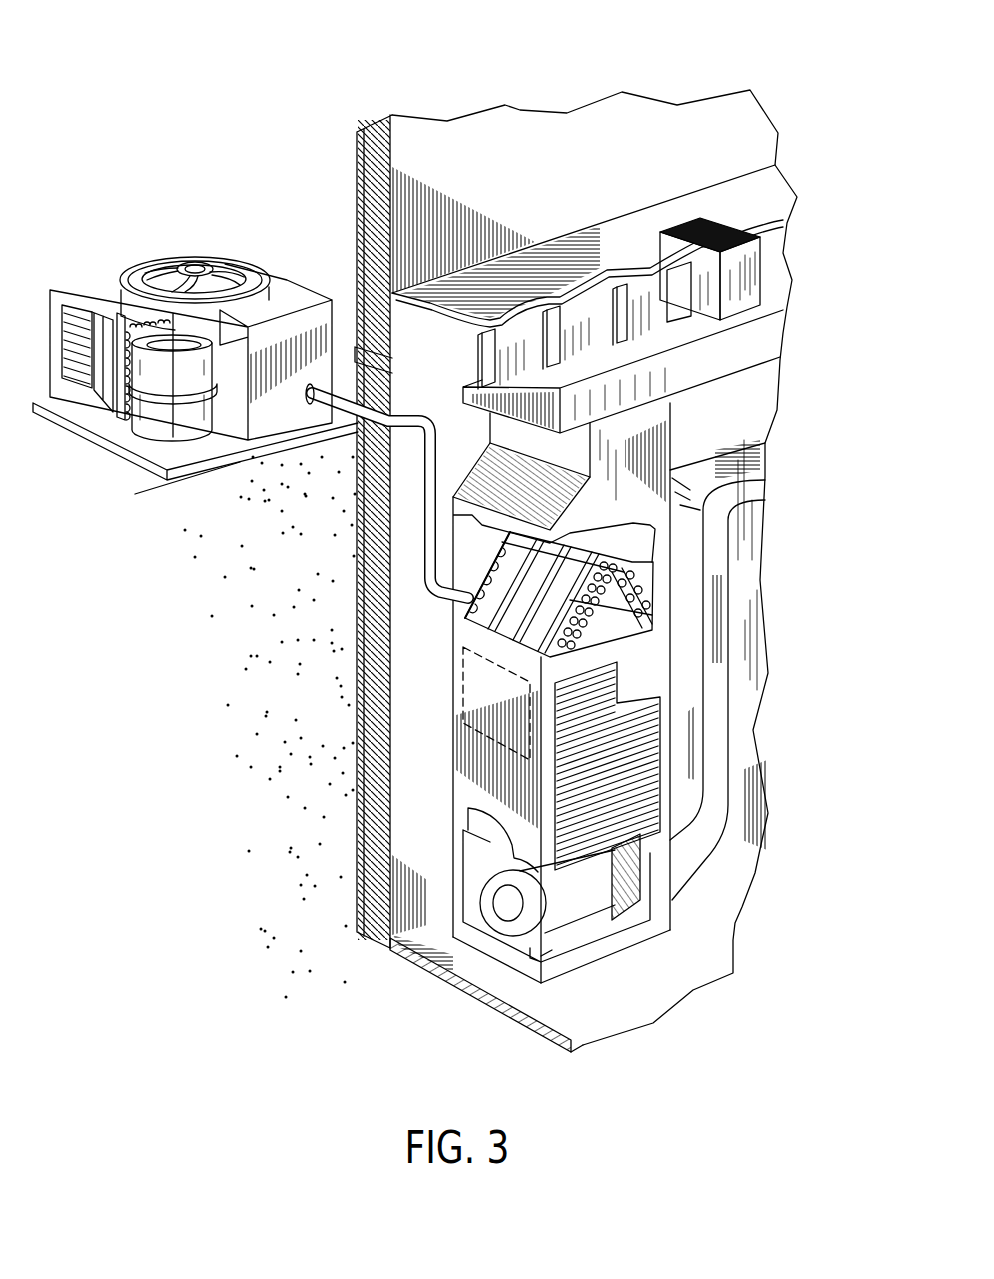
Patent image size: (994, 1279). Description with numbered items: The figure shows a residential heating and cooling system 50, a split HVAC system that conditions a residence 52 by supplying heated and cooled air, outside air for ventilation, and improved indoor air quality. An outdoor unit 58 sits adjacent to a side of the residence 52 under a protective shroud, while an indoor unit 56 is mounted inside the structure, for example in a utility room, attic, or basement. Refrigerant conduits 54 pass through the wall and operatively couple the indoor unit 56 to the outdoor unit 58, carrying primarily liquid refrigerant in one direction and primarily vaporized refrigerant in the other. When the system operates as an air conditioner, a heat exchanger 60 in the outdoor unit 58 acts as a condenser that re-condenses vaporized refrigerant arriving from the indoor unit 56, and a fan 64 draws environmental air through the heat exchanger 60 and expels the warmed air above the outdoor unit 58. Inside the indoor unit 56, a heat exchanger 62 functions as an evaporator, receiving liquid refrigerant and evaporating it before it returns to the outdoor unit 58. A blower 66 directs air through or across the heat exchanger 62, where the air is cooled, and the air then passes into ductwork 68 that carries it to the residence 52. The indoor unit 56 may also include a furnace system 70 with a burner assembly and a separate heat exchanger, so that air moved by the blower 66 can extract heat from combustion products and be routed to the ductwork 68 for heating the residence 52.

The residential heating and cooling system 50 is at (191, 86).
The residence 52 is at (492, 135).
The refrigerant conduits 54 is at (423, 503).
The indoor unit 56 is at (430, 744).
The outdoor unit 58 is at (150, 247).
The heat exchanger 60 is at (125, 322).
The heat exchanger 62 is at (510, 620).
The fan 64 is at (210, 265).
The blower 66 is at (503, 927).
The ductwork 68 is at (712, 357).
The furnace system 70 is at (460, 693).